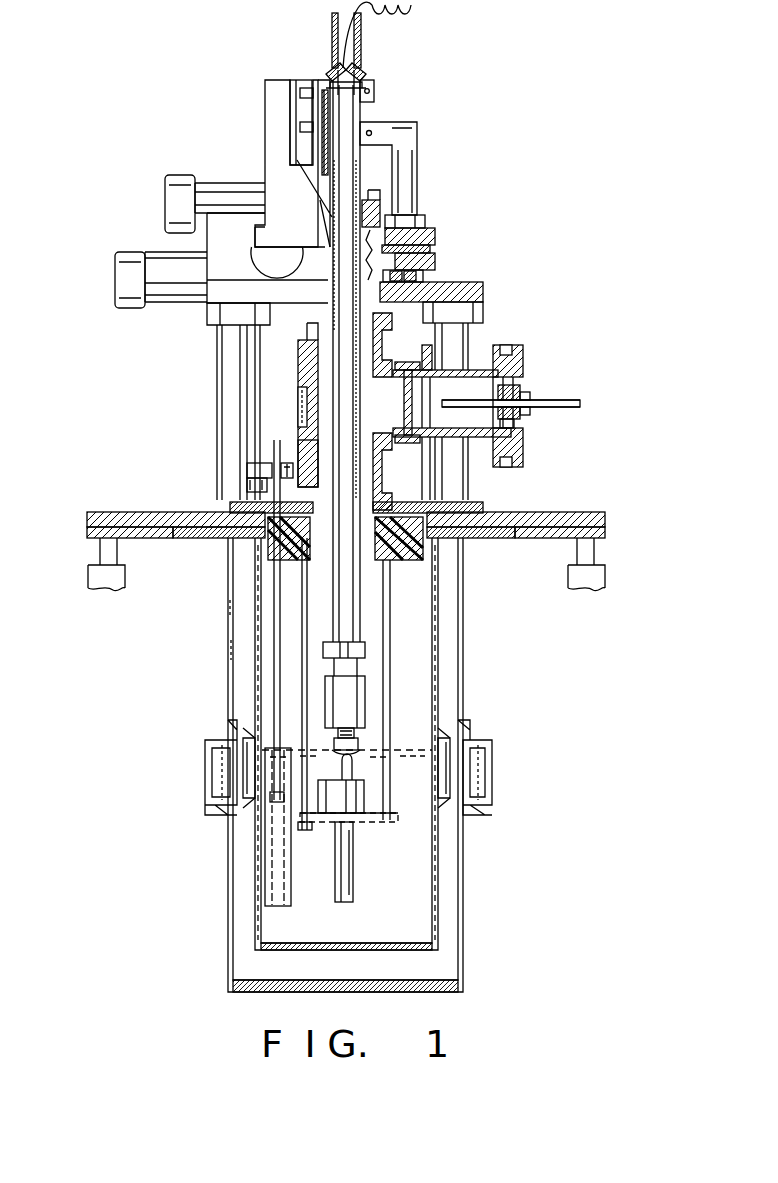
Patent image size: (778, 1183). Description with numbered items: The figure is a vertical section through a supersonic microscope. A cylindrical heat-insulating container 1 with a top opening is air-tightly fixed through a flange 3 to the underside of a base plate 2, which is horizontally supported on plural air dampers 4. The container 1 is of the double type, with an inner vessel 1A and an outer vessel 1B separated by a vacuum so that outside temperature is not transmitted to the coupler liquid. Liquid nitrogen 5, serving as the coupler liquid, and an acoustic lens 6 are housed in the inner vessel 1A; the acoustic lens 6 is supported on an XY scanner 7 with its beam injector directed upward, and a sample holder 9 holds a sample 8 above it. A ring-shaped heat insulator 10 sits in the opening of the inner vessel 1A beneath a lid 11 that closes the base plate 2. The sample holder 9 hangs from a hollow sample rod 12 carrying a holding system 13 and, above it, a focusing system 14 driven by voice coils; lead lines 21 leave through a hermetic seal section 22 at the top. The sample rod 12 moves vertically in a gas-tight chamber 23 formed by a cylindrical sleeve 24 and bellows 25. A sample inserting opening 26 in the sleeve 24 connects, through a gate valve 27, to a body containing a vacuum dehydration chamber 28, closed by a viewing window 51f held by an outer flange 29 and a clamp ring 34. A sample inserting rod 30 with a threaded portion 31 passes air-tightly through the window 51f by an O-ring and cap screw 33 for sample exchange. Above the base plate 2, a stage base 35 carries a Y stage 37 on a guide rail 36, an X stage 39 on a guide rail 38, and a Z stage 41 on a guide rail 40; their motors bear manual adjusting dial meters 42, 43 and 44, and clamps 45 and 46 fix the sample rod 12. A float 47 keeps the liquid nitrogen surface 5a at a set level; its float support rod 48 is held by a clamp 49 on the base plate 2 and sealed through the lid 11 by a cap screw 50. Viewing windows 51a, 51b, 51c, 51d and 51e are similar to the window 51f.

The heat-insulating container 1 is at (221, 678).
The inner vessel 1A is at (257, 652).
The outer vessel 1B is at (228, 607).
The base plate 2 is at (600, 518).
The flange 3 is at (493, 540).
The air dampers 4 is at (123, 577).
The liquid nitrogen 5 is at (428, 877).
The surface of liquid nitrogen 5a is at (412, 752).
The acoustic lens 6 is at (350, 767).
The XY scanner 7 is at (367, 792).
The sample 8 is at (344, 748).
The sample holder 9 is at (357, 740).
The ring-shaped heat insulator 10 is at (268, 548).
The lid 11 is at (232, 508).
The sample rod 12 is at (355, 590).
The system for holding sample holder 13 is at (368, 710).
The focusing system 14 is at (368, 675).
The lead lines 21 is at (397, 12).
The hermetic seal section 22 is at (363, 78).
The gas-tight chamber 23 is at (320, 358).
The cylindrical sleeve 24 is at (313, 440).
The bellows 25 is at (372, 308).
The sample inserting opening 26 is at (357, 405).
The gate valve 27 is at (410, 360).
The vacuum dehydration chamber 28 is at (477, 430).
The outer flange 29 is at (523, 363).
The sample inserting rod 30 is at (573, 409).
The threaded portion 31 is at (445, 410).
The cap screw 33 is at (532, 394).
The clamp ring 34 is at (523, 463).
The stage base 35 is at (486, 294).
The guide rail 36 is at (422, 280).
The stage 37 is at (437, 263).
The guide rail 38 is at (436, 245).
The stage 39 is at (436, 232).
The guide rail 40 is at (318, 157).
The stage 41 is at (313, 83).
The manual adjusting dial meter 42 is at (115, 272).
The manual adjusting dial meter 43 is at (250, 255).
The manual adjusting dial meter 44 is at (165, 203).
The clamp 45 is at (376, 92).
The clamp 46 is at (375, 118).
The float 47 is at (263, 847).
The float support rod 48 is at (273, 695).
The clamp 49 is at (247, 470).
The cap screw 50 is at (247, 488).
The viewing window 51a is at (245, 762).
The viewing window 51b is at (455, 762).
The viewing window 51c is at (205, 740).
The viewing window 51d is at (488, 742).
The viewing window 51e is at (297, 403).
The viewing window 51f is at (525, 422).